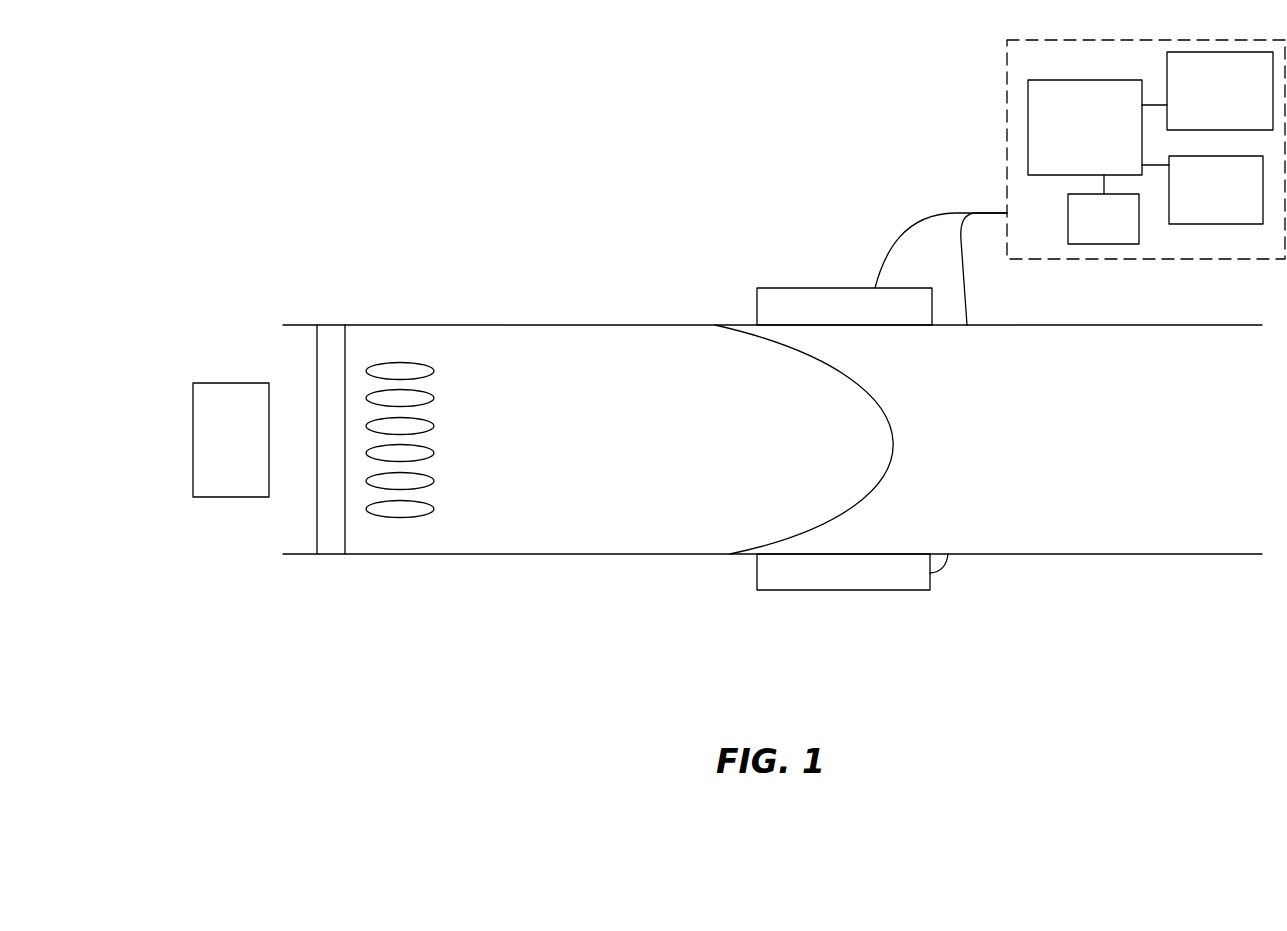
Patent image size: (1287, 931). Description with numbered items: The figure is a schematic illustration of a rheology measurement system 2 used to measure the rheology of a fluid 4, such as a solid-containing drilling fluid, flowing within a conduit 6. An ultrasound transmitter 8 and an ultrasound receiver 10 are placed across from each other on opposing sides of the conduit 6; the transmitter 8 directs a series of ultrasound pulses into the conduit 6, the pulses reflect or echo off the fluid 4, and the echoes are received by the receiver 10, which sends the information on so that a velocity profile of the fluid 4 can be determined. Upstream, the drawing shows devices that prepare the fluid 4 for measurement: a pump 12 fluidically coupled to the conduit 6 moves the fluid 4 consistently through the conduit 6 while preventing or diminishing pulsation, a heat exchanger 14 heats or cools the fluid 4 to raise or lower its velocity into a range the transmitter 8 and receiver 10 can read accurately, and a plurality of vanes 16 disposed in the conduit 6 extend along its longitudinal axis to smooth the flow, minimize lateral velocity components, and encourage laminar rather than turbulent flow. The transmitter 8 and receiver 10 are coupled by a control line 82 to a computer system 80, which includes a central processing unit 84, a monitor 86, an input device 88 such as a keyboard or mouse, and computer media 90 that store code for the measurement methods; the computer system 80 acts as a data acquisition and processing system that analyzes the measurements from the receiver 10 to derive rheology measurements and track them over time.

The rheology measurement system 2 is at (733, 675).
The fluid 4 is at (883, 432).
The conduit 6 is at (1103, 325).
The ultrasound transmitter 8 is at (900, 288).
The ultrasound receiver 10 is at (900, 590).
The pump 12 is at (231, 440).
The heat exchanger 14 is at (332, 330).
The vanes 16 is at (413, 360).
The computer system 80 is at (997, 68).
The control line 82 is at (917, 225).
The central processing unit 84 is at (1098, 137).
The monitor 86 is at (1220, 91).
The input device 88 is at (1216, 190).
The computer media 90 is at (1103, 219).